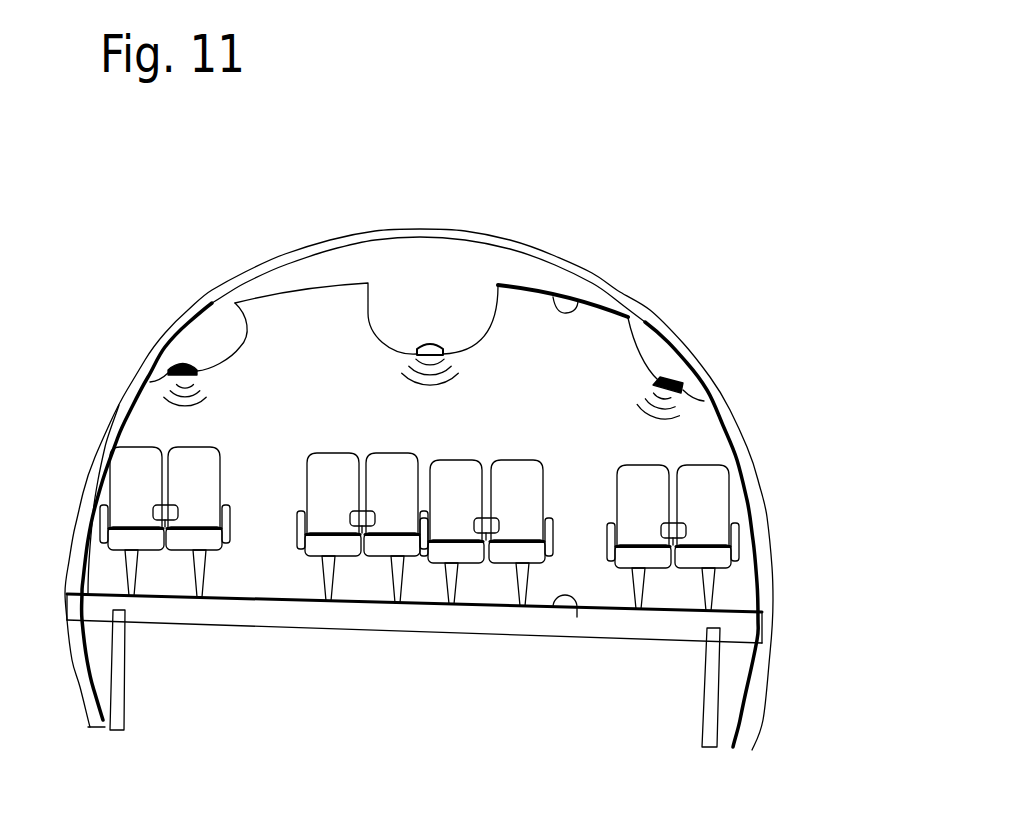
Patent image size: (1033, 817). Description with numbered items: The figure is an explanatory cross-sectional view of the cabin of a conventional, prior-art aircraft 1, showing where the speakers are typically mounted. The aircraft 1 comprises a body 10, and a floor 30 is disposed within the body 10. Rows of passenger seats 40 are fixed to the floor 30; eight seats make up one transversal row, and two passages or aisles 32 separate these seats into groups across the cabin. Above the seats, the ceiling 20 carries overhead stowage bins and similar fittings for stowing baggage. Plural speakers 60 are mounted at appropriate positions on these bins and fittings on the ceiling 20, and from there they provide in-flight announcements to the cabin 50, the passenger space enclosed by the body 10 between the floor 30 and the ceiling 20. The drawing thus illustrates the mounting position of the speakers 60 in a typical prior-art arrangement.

The aircraft 1 is at (776, 444).
The body 10 is at (765, 549).
The ceiling 20 is at (581, 298).
The floor 30 is at (395, 622).
The passage (aisle) 32 is at (577, 617).
The passenger seats 40 is at (323, 547).
The cabin 50 is at (510, 415).
The speakers 60 is at (183, 360).